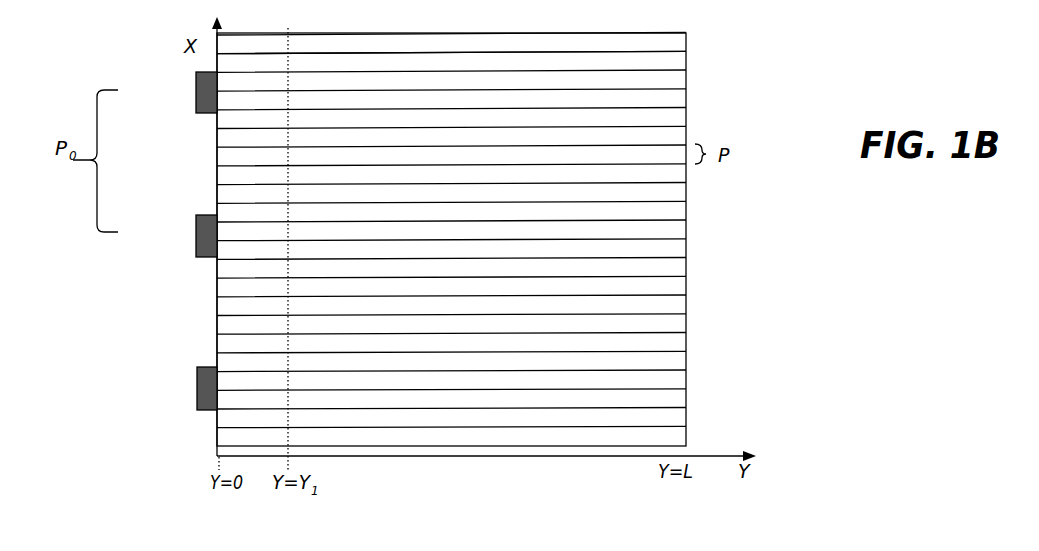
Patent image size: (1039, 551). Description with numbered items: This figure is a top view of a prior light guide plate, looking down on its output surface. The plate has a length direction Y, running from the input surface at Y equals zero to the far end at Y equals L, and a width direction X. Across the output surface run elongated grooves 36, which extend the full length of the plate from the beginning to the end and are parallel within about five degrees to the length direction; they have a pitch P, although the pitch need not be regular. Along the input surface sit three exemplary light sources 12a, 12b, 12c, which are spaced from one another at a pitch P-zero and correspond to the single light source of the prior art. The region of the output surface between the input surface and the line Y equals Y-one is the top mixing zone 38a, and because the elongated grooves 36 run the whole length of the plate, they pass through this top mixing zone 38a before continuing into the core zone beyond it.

The light source 12a is at (200, 233).
The light source 12b is at (200, 95).
The light source 12c is at (200, 383).
The elongated grooves 36 is at (672, 69).
The top mixing zone 38a is at (257, 47).